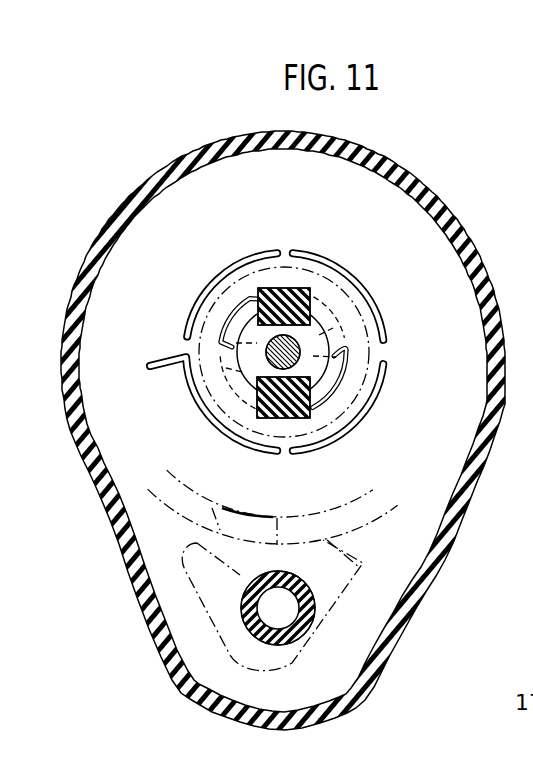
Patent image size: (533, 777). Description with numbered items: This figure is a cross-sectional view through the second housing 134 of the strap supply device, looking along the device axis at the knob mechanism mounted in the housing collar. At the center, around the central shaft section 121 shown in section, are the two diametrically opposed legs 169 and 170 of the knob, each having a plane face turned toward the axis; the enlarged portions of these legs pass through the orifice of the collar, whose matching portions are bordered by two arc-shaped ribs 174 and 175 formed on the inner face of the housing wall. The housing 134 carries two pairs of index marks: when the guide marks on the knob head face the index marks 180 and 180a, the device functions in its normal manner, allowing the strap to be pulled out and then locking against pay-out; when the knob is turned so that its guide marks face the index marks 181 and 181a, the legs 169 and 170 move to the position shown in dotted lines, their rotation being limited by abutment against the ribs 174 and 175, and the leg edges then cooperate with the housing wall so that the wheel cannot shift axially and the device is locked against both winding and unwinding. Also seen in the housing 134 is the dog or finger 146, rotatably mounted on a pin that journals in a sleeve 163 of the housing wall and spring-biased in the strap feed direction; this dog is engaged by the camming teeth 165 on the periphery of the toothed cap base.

The second housing 134 is at (137, 169).
The index mark 180 is at (284, 244).
The rib 174 is at (242, 313).
The leg 169 is at (305, 290).
The index mark 181 is at (377, 296).
The shaft 121 is at (301, 352).
The rib 175 is at (328, 383).
The leg 170 is at (295, 412).
The index mark 181a is at (188, 402).
The index mark 180a is at (282, 456).
The teeth 165 is at (237, 522).
The dog or finger 146 is at (215, 590).
The sleeve 163 is at (305, 633).